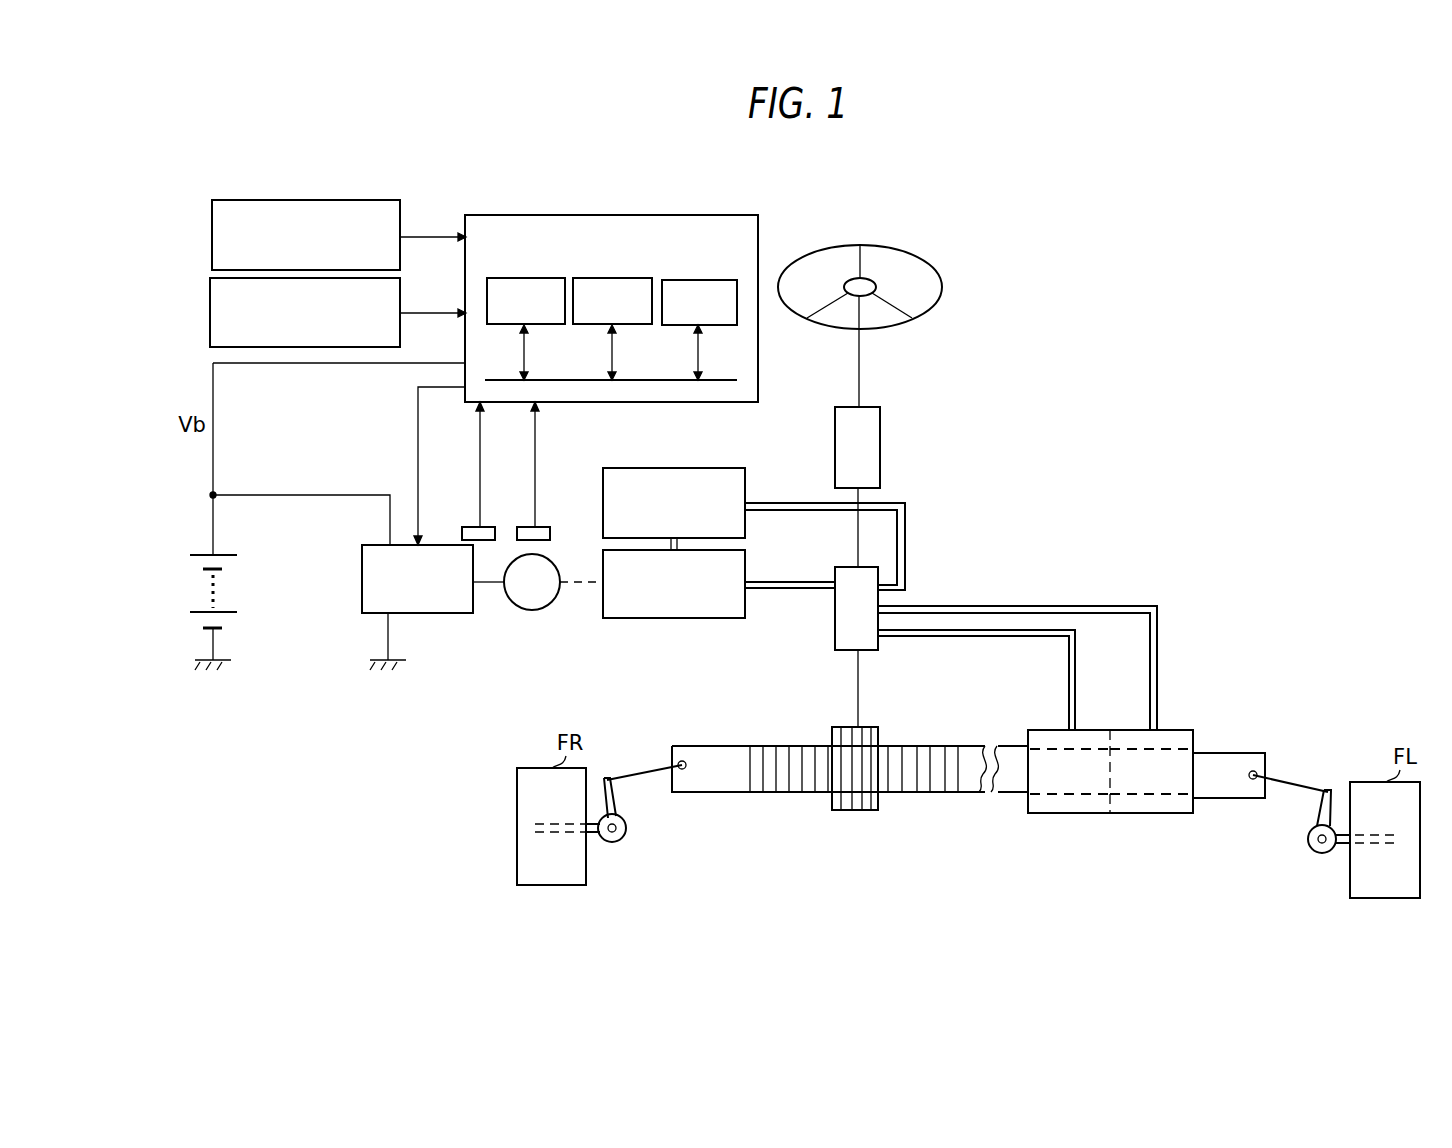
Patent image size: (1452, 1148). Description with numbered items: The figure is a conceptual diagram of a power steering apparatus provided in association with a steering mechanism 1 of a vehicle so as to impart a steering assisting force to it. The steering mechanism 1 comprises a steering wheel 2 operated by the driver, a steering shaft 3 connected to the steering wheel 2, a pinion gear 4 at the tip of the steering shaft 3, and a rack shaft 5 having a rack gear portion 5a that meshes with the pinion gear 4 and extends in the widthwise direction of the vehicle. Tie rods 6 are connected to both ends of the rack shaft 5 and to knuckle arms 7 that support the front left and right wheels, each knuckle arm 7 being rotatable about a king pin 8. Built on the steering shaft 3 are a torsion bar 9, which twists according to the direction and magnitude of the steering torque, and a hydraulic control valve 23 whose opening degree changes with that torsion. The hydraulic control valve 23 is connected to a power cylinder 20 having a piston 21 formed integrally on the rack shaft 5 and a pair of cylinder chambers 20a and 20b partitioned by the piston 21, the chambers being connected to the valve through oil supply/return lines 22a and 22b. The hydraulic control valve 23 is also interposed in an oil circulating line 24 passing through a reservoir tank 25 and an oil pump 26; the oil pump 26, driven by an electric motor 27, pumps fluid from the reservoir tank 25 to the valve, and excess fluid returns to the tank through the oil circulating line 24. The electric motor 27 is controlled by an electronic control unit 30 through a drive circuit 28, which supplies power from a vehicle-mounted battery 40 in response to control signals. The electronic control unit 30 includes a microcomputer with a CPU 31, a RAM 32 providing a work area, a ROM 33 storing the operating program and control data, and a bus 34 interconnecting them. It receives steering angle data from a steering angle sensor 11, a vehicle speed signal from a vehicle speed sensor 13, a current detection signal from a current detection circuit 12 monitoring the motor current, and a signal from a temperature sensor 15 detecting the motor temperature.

The steering mechanism 1 is at (942, 414).
The steering wheel 2 is at (943, 287).
The steering shaft 3 is at (860, 372).
The pinion gear 4 is at (850, 811).
The rack shaft 5 is at (972, 793).
The rack gear portion 5a is at (800, 793).
The tie rods 6 is at (648, 772).
The knuckle arms 7 is at (627, 824).
The king pin 8 is at (618, 842).
The torsion bar 9 is at (835, 447).
The steering angle sensor 11 is at (208, 312).
The current detection circuit 12 is at (544, 527).
The vehicle speed sensor 13 is at (210, 235).
The temperature sensor 15 is at (489, 527).
The power cylinder 20 is at (1170, 730).
The cylinder chamber 20a is at (1074, 813).
The cylinder chamber 20b is at (1164, 813).
The piston 21 is at (1116, 813).
The oil supply/return line 22a is at (972, 638).
The oil supply/return line 22b is at (1018, 606).
The hydraulic control valve 23 is at (835, 627).
The oil circulating line 24 is at (906, 541).
The reservoir tank 25 is at (674, 468).
The oil pump 26 is at (672, 618).
The electric motor 27 is at (532, 610).
The drive circuit 28 is at (362, 581).
The electronic control unit 30 is at (614, 215).
The CPU 31 is at (522, 278).
The RAM 32 is at (696, 279).
The ROM 33 is at (610, 278).
The bus 34 is at (712, 379).
The vehicle-mounted battery 40 is at (196, 551).